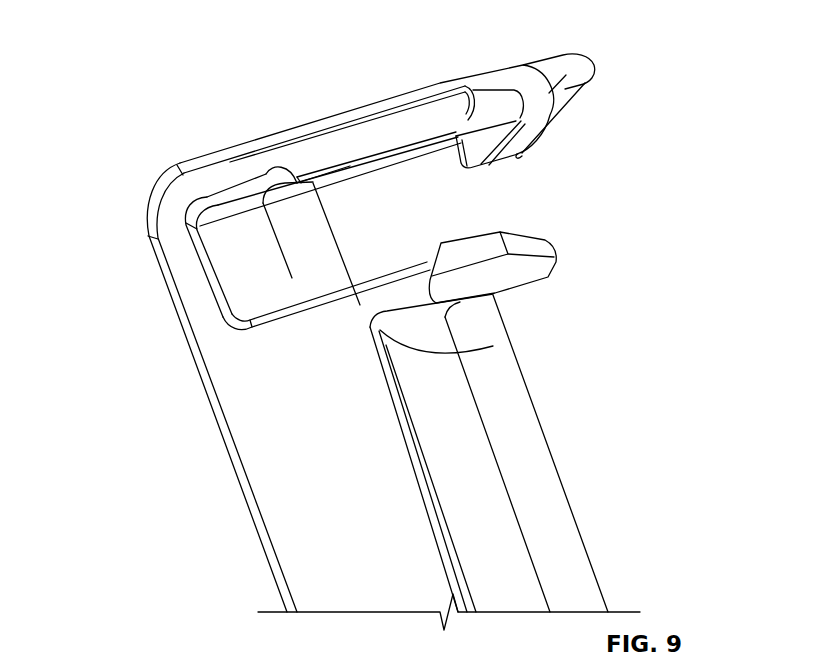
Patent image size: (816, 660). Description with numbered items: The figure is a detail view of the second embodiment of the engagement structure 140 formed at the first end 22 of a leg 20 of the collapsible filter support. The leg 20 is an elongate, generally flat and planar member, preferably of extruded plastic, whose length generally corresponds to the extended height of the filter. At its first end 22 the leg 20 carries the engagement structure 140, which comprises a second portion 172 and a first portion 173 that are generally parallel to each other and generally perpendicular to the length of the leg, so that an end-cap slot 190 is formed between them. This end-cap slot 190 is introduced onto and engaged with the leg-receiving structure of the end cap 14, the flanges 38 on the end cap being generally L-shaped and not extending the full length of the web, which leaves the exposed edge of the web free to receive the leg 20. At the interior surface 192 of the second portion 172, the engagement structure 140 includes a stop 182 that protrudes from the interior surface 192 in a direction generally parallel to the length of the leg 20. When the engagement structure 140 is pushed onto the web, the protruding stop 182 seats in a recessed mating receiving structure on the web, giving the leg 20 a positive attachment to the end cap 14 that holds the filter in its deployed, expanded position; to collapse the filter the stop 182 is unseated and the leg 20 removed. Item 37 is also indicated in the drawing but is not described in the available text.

The engagement structure 140 is at (120, 108).
The leg 20 is at (280, 527).
The first end 22 is at (307, 125).
The second portion 172 is at (368, 136).
The interior surface 192 is at (408, 152).
The stop 182 is at (468, 148).
The end-cap slot 190 is at (515, 186).
The first portion 173 is at (493, 346).
The end cap 14 is at (22, 659).
The flange 38 is at (101, 659).
The wall 37 is at (140, 655).